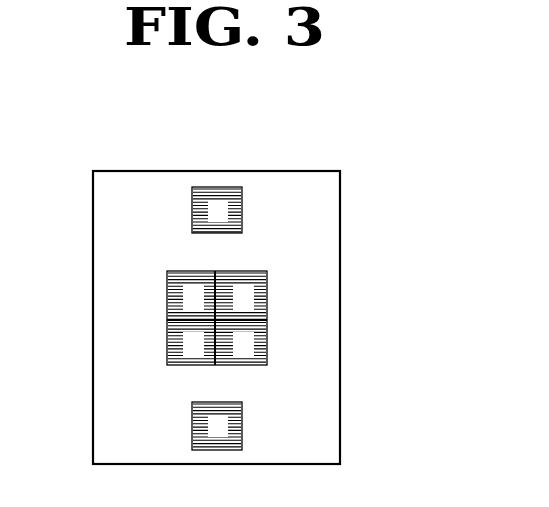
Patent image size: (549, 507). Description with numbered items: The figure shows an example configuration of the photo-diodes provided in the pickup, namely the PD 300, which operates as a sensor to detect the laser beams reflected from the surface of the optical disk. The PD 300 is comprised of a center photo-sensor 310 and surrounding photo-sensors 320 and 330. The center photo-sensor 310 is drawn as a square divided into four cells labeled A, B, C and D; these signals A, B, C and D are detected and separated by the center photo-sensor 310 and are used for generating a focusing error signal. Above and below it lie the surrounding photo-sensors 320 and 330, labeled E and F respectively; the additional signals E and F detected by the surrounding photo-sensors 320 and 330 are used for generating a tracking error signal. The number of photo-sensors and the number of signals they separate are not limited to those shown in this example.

The PD 300 is at (215, 171).
The center photo-sensor 310 is at (267, 318).
The surrounding photo-sensor 320 is at (242, 208).
The surrounding photo-sensor 330 is at (242, 425).